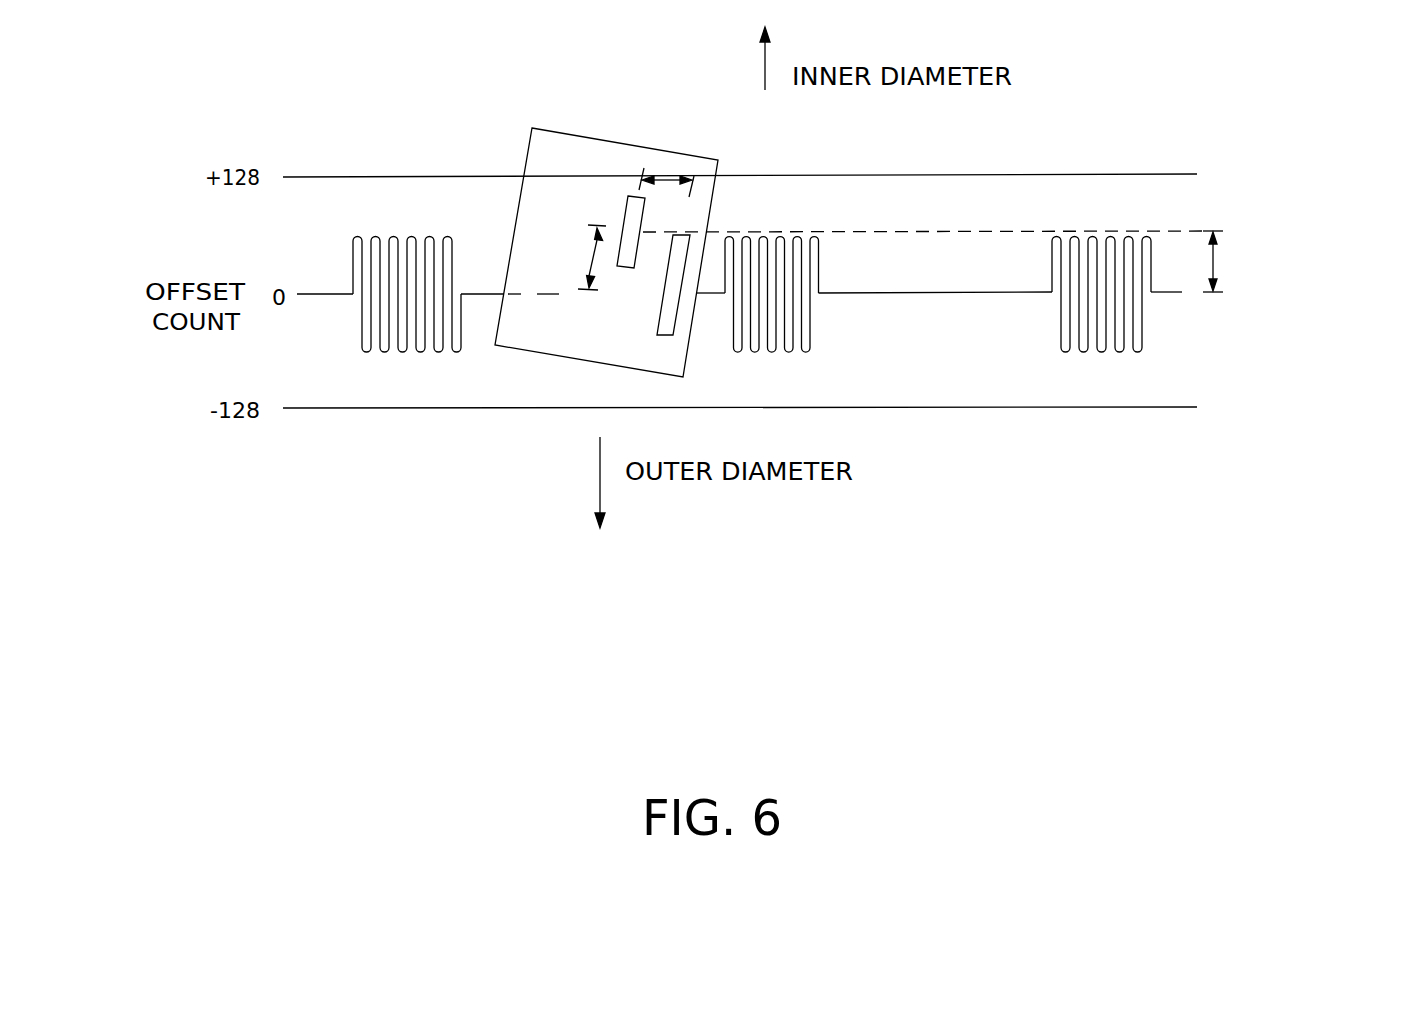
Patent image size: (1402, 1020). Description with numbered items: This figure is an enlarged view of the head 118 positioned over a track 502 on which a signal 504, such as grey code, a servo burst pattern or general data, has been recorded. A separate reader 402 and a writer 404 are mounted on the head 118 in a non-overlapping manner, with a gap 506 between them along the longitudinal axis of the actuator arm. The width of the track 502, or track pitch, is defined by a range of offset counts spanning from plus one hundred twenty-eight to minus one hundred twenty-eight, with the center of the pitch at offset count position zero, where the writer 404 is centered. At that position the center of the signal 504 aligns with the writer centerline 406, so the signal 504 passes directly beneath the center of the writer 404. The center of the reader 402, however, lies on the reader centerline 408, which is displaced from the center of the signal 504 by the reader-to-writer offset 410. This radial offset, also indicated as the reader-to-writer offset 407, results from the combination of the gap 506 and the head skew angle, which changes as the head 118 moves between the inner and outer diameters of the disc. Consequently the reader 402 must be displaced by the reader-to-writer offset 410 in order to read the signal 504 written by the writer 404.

The head 118 is at (528, 151).
The reader 402 is at (628, 196).
The writer 404 is at (675, 337).
The writer centerline 406 is at (1204, 293).
The reader-to-writer offset 407 is at (590, 270).
The reader centerline 408 is at (1204, 231).
The reader-to-writer offset 410 is at (1225, 260).
The track 502 is at (197, 237).
The signal 504 is at (398, 343).
The gap 506 is at (670, 180).